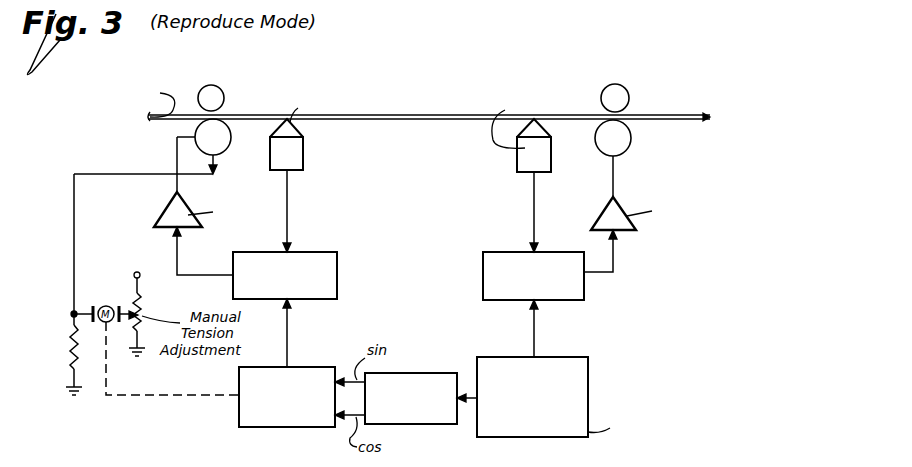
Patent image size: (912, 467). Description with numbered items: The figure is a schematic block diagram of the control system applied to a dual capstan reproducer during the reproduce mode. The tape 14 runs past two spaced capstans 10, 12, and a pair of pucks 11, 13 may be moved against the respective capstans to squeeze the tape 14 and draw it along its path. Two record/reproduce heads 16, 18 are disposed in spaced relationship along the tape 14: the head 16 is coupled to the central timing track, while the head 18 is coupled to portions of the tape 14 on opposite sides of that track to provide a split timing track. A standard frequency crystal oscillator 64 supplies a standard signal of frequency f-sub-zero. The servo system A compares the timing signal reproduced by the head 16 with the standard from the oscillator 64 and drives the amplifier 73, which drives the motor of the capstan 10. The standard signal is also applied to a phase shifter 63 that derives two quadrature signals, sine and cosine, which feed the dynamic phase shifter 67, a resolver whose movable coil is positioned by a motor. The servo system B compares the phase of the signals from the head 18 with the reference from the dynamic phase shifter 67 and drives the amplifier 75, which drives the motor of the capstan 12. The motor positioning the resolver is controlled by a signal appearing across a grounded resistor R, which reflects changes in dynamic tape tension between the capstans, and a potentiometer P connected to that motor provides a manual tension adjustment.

The capstan 10 is at (631, 141).
The puck 11 is at (627, 104).
The capstan 12 is at (225, 150).
The puck 13 is at (238, 93).
The tape 14 is at (434, 122).
The record/reproduce head 16 is at (541, 156).
The record/reproduce head 18 is at (288, 162).
The phase shifter 63 is at (428, 373).
The standard frequency crystal oscillator 64 is at (590, 362).
The dynamic phase shifter 67 is at (316, 367).
The amplifier 73 is at (602, 214).
The amplifier 75 is at (167, 213).
The servo system A is at (492, 252).
The servo system B is at (315, 252).
The potentiometer P is at (137, 322).
The resistor R is at (72, 350).